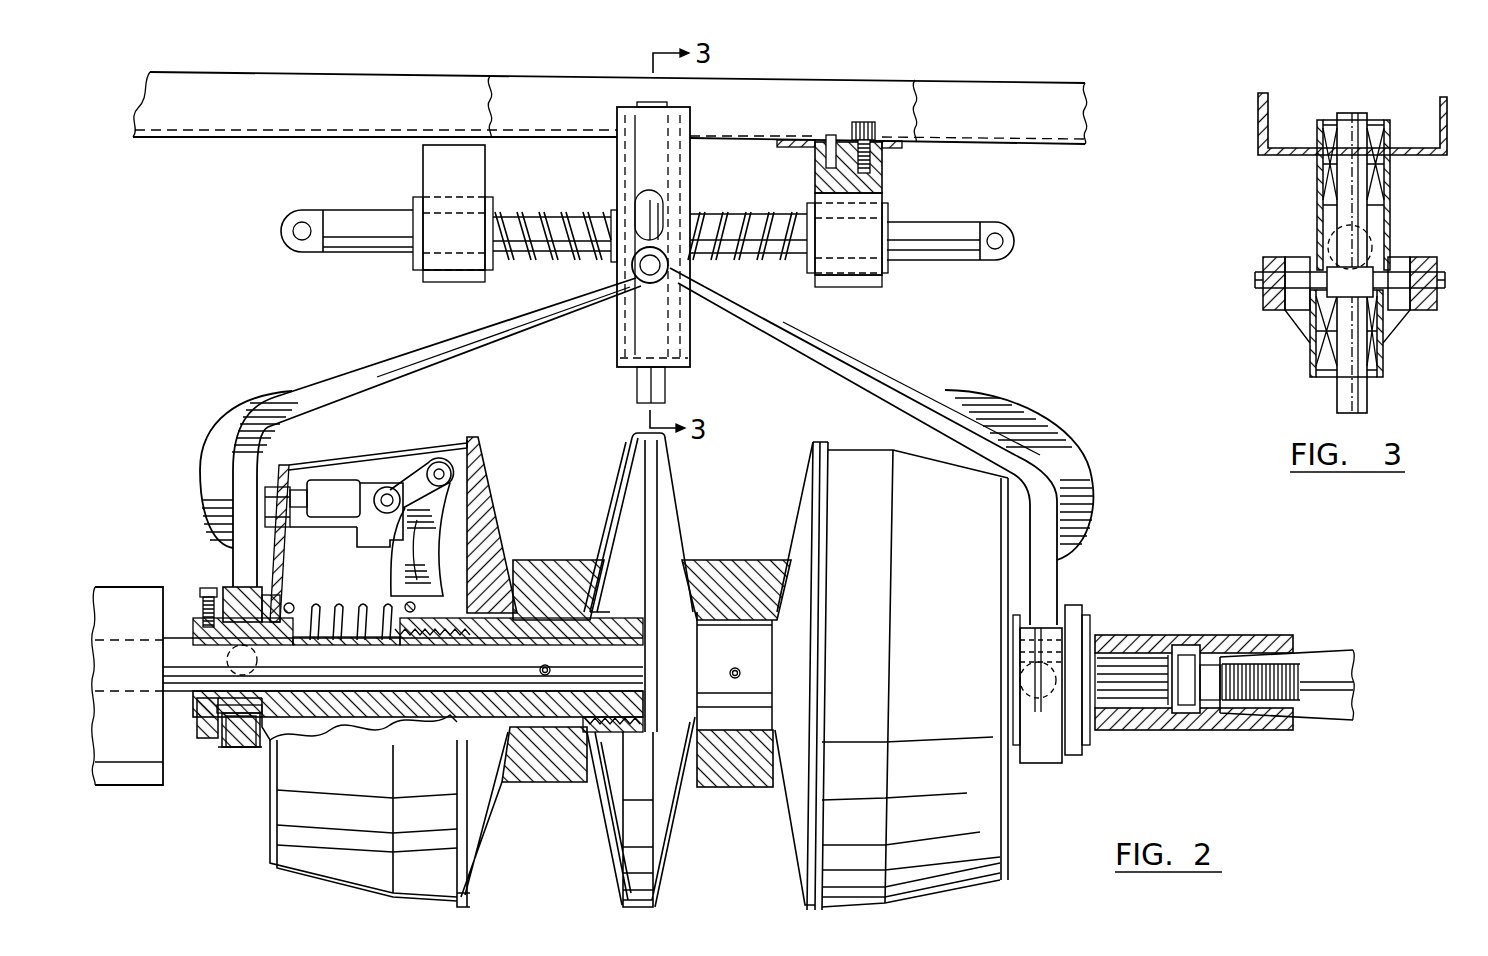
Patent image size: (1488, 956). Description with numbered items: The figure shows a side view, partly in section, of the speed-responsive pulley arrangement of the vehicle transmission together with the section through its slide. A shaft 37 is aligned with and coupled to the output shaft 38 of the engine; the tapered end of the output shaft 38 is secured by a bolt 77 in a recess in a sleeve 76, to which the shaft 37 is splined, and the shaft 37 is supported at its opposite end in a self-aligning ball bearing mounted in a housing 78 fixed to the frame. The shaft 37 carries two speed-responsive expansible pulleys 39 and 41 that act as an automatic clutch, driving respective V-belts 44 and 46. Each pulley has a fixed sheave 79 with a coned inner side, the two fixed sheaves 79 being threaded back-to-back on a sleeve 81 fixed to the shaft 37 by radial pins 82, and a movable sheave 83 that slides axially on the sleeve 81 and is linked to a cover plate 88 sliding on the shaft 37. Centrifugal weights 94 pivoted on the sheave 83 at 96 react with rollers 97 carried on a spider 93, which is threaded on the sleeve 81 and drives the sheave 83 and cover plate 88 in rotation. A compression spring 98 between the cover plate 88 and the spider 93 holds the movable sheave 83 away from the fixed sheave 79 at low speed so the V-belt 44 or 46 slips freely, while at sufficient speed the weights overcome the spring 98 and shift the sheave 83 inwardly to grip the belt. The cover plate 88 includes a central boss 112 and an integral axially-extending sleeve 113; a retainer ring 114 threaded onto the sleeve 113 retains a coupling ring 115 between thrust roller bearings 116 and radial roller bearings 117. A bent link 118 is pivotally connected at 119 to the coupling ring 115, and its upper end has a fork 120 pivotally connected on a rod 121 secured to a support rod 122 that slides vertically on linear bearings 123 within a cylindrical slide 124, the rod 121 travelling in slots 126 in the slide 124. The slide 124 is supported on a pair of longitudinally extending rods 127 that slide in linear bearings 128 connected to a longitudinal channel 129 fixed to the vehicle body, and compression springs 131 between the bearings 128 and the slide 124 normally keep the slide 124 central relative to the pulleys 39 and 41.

In FIG. 2, the shaft 37 is at (183, 653).
In FIG. 2, the output shaft 38 is at (1320, 707).
In FIG. 2, the speed-responsive expansible pulley 39 is at (803, 477).
In FIG. 2, the speed-responsive expansible pulley 41 is at (483, 480).
In FIG. 2, the V-belt 44 is at (570, 763).
In FIG. 2, the V-belt 46 is at (737, 773).
In FIG. 2, the sleeve 76 is at (1177, 640).
In FIG. 2, the bolt 77 is at (1188, 700).
In FIG. 2, the housing 78 is at (137, 770).
In FIG. 2, the fixed sheave 79 is at (610, 843).
In FIG. 2, the sleeve 81 is at (550, 712).
In FIG. 2, the radial pins 82 is at (733, 667).
In FIG. 2, the movable sheave 83 is at (490, 537).
In FIG. 2, the cover plate 88 is at (260, 578).
In FIG. 2, the spider 93 is at (384, 527).
In FIG. 2, the centrifugal weights 94 is at (425, 487).
In FIG. 2, the pivot 96 is at (441, 463).
In FIG. 2, the rollers 97 is at (385, 488).
In FIG. 2, the compression spring 98 is at (337, 612).
In FIG. 2, the central boss 112 is at (305, 612).
In FIG. 2, the axially-extending sleeve 113 is at (200, 708).
In FIG. 2, the retainer ring 114 is at (202, 592).
In FIG. 2, the coupling ring 115 is at (240, 730).
In FIG. 2, the thrust roller bearings 116 is at (220, 745).
In FIG. 2, the radial roller bearings 117 is at (262, 713).
In FIG. 2, the bent link 118 is at (290, 392).
In FIG. 2, the pivotal connection 119 is at (258, 657).
In FIG. 2, the fork 120 is at (597, 267).
In FIG. 3, the fork 120 is at (1453, 243).
In FIG. 2, the rod 121 is at (672, 268).
In FIG. 3, the rod 121 is at (1257, 273).
In FIG. 2, the support rod 122 is at (665, 383).
In FIG. 3, the support rod 122 is at (1362, 400).
In FIG. 3, the linear bearings 123 is at (1375, 190).
In FIG. 2, the cylindrical slide 124 is at (687, 343).
In FIG. 3, the cylindrical slide 124 is at (1317, 182).
In FIG. 2, the slots 126 is at (627, 198).
In FIG. 2, the longitudinally extending rods 127 is at (363, 223).
In FIG. 2, the linear bearings 128 is at (883, 213).
In FIG. 2, the longitudinal channel 129 is at (1043, 150).
In FIG. 3, the longitudinal channel 129 is at (1258, 123).
In FIG. 2, the compression springs 131 is at (516, 215).